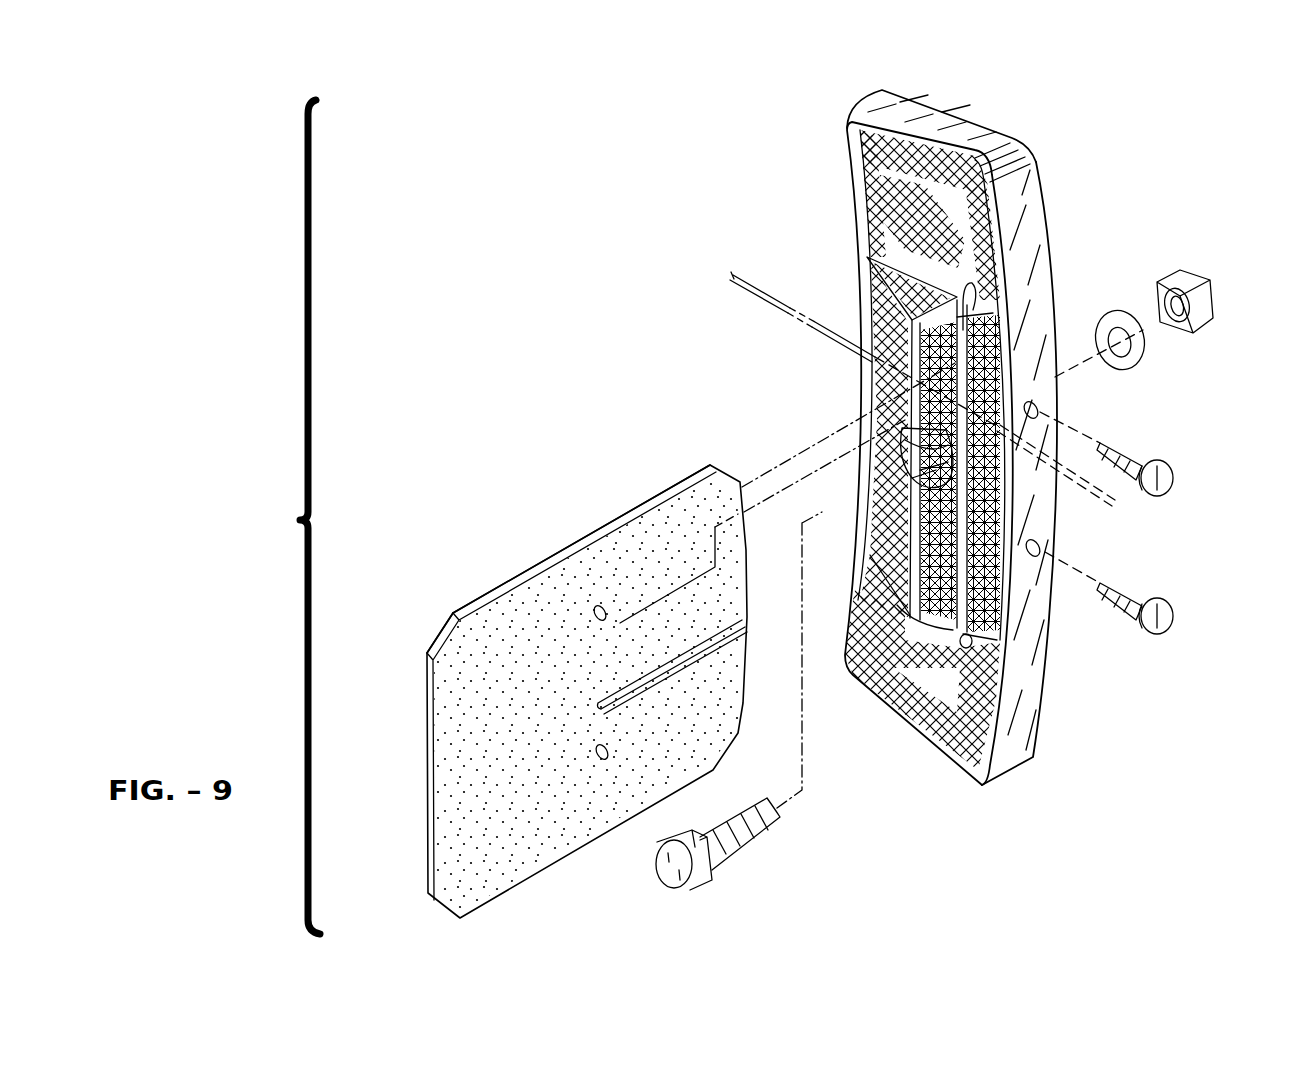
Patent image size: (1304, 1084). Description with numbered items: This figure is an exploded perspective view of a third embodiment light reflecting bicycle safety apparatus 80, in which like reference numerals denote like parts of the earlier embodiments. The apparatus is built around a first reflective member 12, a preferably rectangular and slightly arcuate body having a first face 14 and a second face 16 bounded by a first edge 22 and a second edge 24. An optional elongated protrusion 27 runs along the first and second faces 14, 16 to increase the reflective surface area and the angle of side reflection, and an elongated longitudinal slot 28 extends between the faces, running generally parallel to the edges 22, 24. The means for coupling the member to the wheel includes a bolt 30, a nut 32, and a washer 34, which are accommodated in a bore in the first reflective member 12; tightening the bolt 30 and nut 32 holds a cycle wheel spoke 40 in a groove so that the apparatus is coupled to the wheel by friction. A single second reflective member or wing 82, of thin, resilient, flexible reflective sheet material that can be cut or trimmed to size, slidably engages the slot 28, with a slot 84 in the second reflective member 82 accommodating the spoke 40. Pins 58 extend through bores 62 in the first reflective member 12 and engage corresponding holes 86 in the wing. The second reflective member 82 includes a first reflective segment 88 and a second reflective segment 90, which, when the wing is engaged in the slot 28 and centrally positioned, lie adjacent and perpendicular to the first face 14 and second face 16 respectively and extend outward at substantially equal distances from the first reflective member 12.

The first reflective member 12 is at (925, 107).
The first face 14 is at (866, 157).
The second face 16 is at (1070, 156).
The first edge 22 is at (1030, 680).
The second edge 24 is at (845, 606).
The protrusion 27 is at (913, 343).
The elongated longitudinal slot 28 is at (975, 282).
The bolt 30 is at (758, 837).
The nut 32 is at (1207, 322).
The washer 34 is at (1137, 363).
The cycle wheel spoke 40 is at (733, 272).
The pins 58 is at (1173, 470).
The bores 62 is at (1040, 407).
The light reflecting bicycle safety apparatus 80 is at (291, 517).
The second reflective member 82 is at (507, 590).
The slot 84 is at (742, 630).
The holes 86 is at (600, 600).
The first reflective segment 88 is at (437, 628).
The second reflective segment 90 is at (702, 458).